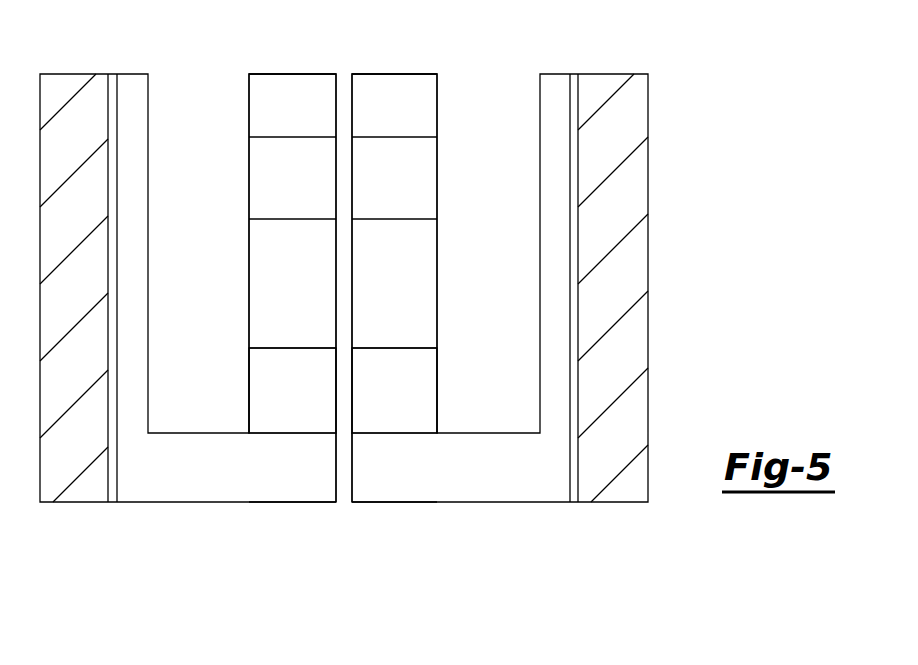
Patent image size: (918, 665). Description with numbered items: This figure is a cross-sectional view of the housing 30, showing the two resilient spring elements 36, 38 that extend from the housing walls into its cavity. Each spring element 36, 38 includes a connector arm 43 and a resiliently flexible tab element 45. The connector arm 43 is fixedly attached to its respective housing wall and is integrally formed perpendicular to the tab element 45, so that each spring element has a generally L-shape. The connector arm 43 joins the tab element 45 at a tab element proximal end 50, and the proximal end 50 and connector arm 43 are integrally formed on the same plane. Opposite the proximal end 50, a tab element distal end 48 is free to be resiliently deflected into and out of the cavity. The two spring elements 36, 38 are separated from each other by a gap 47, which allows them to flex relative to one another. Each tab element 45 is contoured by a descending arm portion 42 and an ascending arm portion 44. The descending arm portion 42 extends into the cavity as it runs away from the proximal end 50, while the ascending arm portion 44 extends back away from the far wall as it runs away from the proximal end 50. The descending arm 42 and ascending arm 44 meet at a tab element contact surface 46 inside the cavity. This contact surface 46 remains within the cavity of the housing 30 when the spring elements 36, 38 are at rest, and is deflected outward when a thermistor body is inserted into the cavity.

The housing 30 is at (395, 278).
The spring element 36 is at (262, 505).
The spring element 38 is at (428, 505).
The descending arm portion 42 is at (258, 301).
The connector arm 43 is at (291, 493).
The ascending arm portion 44 is at (256, 112).
The tab element 45 is at (222, 226).
The tab element contact surface 46 is at (256, 189).
The gap 47 is at (343, 483).
The tab element distal end 48 is at (285, 74).
The tab element proximal end 50 is at (253, 396).